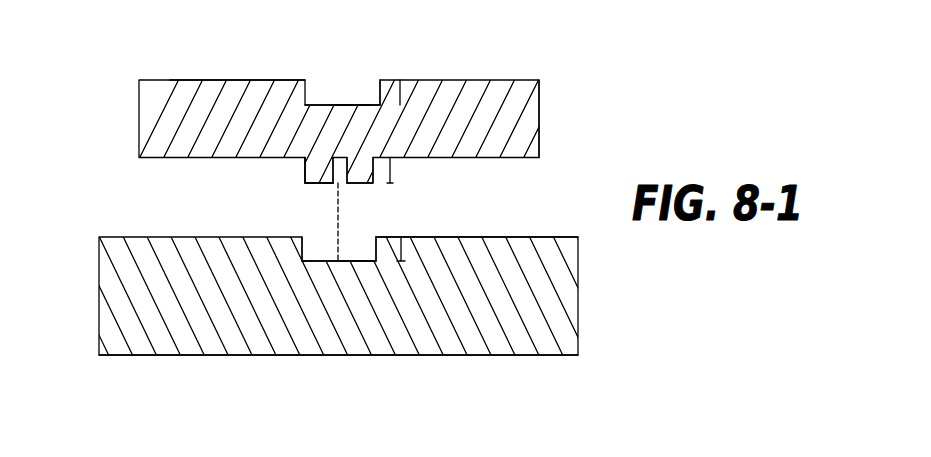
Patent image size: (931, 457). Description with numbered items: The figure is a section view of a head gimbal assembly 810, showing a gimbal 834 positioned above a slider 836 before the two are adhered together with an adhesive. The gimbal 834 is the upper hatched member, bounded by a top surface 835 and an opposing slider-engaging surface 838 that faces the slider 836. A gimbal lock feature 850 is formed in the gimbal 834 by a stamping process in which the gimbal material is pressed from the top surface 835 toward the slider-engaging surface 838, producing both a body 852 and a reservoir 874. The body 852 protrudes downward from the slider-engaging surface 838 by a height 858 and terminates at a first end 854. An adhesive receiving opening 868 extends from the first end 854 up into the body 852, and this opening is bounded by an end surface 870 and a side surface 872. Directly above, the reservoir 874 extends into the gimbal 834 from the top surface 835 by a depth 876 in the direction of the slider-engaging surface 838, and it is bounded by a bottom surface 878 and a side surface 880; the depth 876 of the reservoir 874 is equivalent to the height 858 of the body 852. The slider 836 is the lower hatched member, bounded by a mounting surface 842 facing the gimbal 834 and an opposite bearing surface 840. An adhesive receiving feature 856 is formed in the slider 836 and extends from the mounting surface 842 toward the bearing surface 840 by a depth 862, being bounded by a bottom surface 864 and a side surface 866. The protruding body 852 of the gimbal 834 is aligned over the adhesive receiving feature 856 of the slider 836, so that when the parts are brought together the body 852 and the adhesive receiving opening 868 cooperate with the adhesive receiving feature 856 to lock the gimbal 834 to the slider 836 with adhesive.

The head gimbal assembly 810 is at (594, 92).
The gimbal 834 is at (139, 85).
The top surface 835 is at (170, 79).
The slider 836 is at (98, 242).
The slider-engaging surface 838 is at (520, 158).
The bearing surface 840 is at (537, 355).
The mounting surface 842 is at (523, 237).
The gimbal lock feature 850 is at (283, 172).
The body 852 is at (319, 169).
The first end 854 is at (369, 185).
The adhesive receiving feature 856 is at (318, 279).
The height 858 is at (392, 165).
The depth 862 is at (403, 243).
The bottom surface 864 is at (345, 265).
The side surface 866 is at (302, 248).
The adhesive receiving opening 868 is at (308, 180).
The end surface 870 is at (338, 160).
The side surface 872 is at (340, 178).
The reservoir 874 is at (327, 74).
The depth 876 is at (401, 87).
The bottom surface 878 is at (351, 105).
The side surface 880 is at (378, 104).